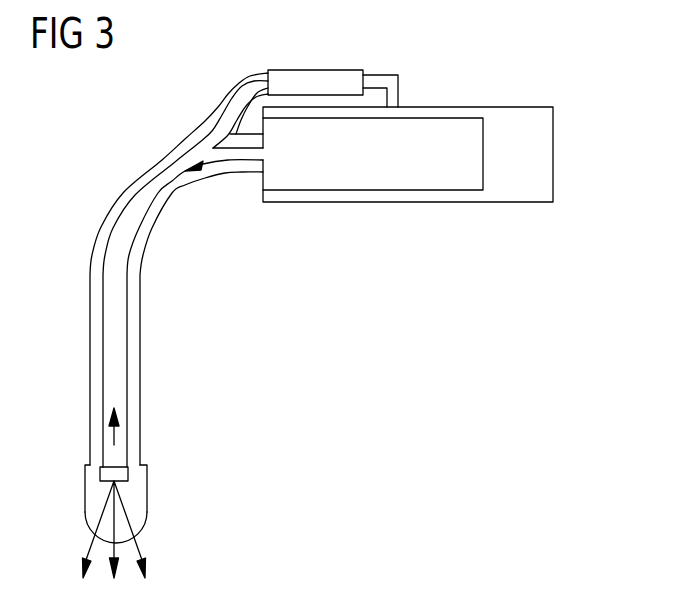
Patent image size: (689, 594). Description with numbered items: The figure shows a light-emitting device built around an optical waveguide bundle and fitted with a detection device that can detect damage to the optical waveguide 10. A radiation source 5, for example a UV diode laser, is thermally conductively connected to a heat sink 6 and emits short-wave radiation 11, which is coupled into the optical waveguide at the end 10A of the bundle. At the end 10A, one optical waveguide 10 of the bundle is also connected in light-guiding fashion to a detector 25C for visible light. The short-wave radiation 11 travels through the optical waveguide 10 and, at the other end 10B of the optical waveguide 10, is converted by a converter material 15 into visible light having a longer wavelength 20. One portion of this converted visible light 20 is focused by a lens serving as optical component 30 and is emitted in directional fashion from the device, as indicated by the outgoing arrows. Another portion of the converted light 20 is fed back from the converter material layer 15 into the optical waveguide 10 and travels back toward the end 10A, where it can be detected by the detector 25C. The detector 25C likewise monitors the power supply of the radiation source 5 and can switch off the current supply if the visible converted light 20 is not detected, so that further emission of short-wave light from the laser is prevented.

The radiation source 5 is at (439, 133).
The heat sink 6 is at (544, 154).
The optical waveguide 10 is at (218, 105).
The end of the optical waveguide 10A is at (252, 155).
The second end of the optical waveguide 10B is at (110, 462).
The short-wave radiation 11 is at (227, 163).
The converter material 15 is at (120, 474).
The visible light having a longer wavelength 20 is at (120, 442).
The detector 25C is at (320, 77).
The optical component 30 is at (140, 503).